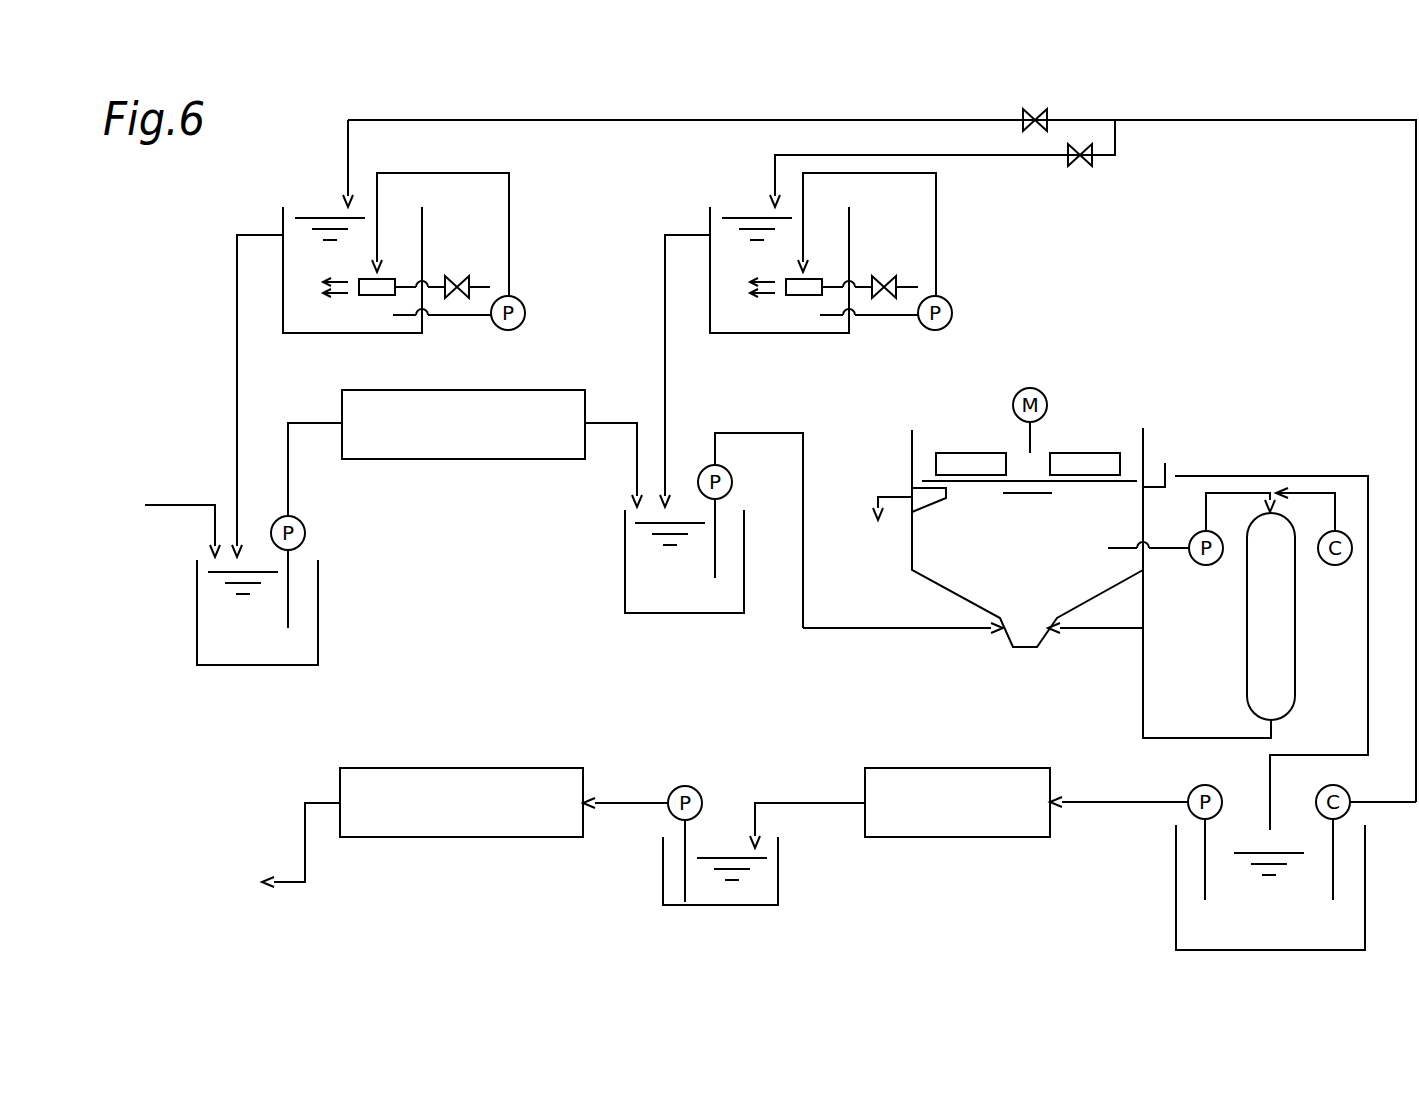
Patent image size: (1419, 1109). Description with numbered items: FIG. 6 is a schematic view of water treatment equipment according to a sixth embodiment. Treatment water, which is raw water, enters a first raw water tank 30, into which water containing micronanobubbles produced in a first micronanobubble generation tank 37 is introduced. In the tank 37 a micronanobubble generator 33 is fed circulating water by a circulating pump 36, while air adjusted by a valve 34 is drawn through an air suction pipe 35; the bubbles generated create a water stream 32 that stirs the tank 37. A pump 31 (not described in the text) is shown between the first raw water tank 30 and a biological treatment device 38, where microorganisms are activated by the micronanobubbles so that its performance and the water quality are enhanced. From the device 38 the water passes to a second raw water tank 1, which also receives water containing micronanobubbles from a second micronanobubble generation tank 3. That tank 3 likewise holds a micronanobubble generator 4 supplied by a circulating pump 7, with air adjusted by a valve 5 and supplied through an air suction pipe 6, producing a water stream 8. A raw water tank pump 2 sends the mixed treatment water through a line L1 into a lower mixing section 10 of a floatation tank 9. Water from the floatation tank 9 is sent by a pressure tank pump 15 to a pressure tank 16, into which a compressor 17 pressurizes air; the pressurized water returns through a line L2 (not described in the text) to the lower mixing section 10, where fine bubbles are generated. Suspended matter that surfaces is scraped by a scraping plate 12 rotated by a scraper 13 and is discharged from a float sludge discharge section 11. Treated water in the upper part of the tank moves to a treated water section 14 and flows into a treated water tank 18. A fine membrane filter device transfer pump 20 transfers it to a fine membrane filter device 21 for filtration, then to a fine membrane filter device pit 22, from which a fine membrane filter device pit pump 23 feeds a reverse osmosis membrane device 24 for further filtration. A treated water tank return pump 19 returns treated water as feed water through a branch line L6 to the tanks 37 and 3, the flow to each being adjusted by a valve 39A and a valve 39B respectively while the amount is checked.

The raw water tank 1 is at (625, 560).
The raw water tank pump 2 is at (733, 482).
The micronanobubble generation tank 3 is at (705, 220).
The micronanobubble generator 4 is at (802, 296).
The valve 5 is at (880, 278).
The air suction pipe 6 is at (917, 280).
The circulating pump 7 is at (955, 313).
The water stream 8 is at (774, 296).
The floatation tank 9 is at (900, 477).
The lower mixing section 10 is at (1045, 650).
The float sludge discharge section 11 is at (922, 483).
The scraping plate 12 is at (970, 455).
The scraper 13 is at (1030, 388).
The treated water section 14 is at (1165, 463).
The pressure tank pump 15 is at (1206, 566).
The pressure tank 16 is at (1247, 675).
The compressor 17 is at (1335, 566).
The treated water tank 18 is at (1176, 882).
The treated water tank return pump 19 is at (1350, 795).
The fine membrane filter device transfer pump 20 is at (1188, 795).
The fine membrane filter device 21 is at (955, 837).
The fine membrane filter device pit 22 is at (663, 870).
The fine membrane filter device pit pump 23 is at (688, 786).
The reverse osmosis membrane device 24 is at (463, 768).
The first raw water tank 30 is at (197, 612).
The pump 31 is at (306, 533).
The water stream 32 is at (347, 296).
The micronanobubble generator 33 is at (375, 296).
The valve 34 is at (453, 278).
The air suction pipe 35 is at (490, 280).
The circulating pump 36 is at (528, 313).
The first micronanobubble generation tank 37 is at (278, 220).
The biological treatment device 38 is at (460, 459).
The valve 39A is at (1048, 116).
The valve 39B is at (1083, 167).
The line L1 is at (903, 629).
The line L2 is at (1098, 629).
The branch line L6 is at (1218, 121).